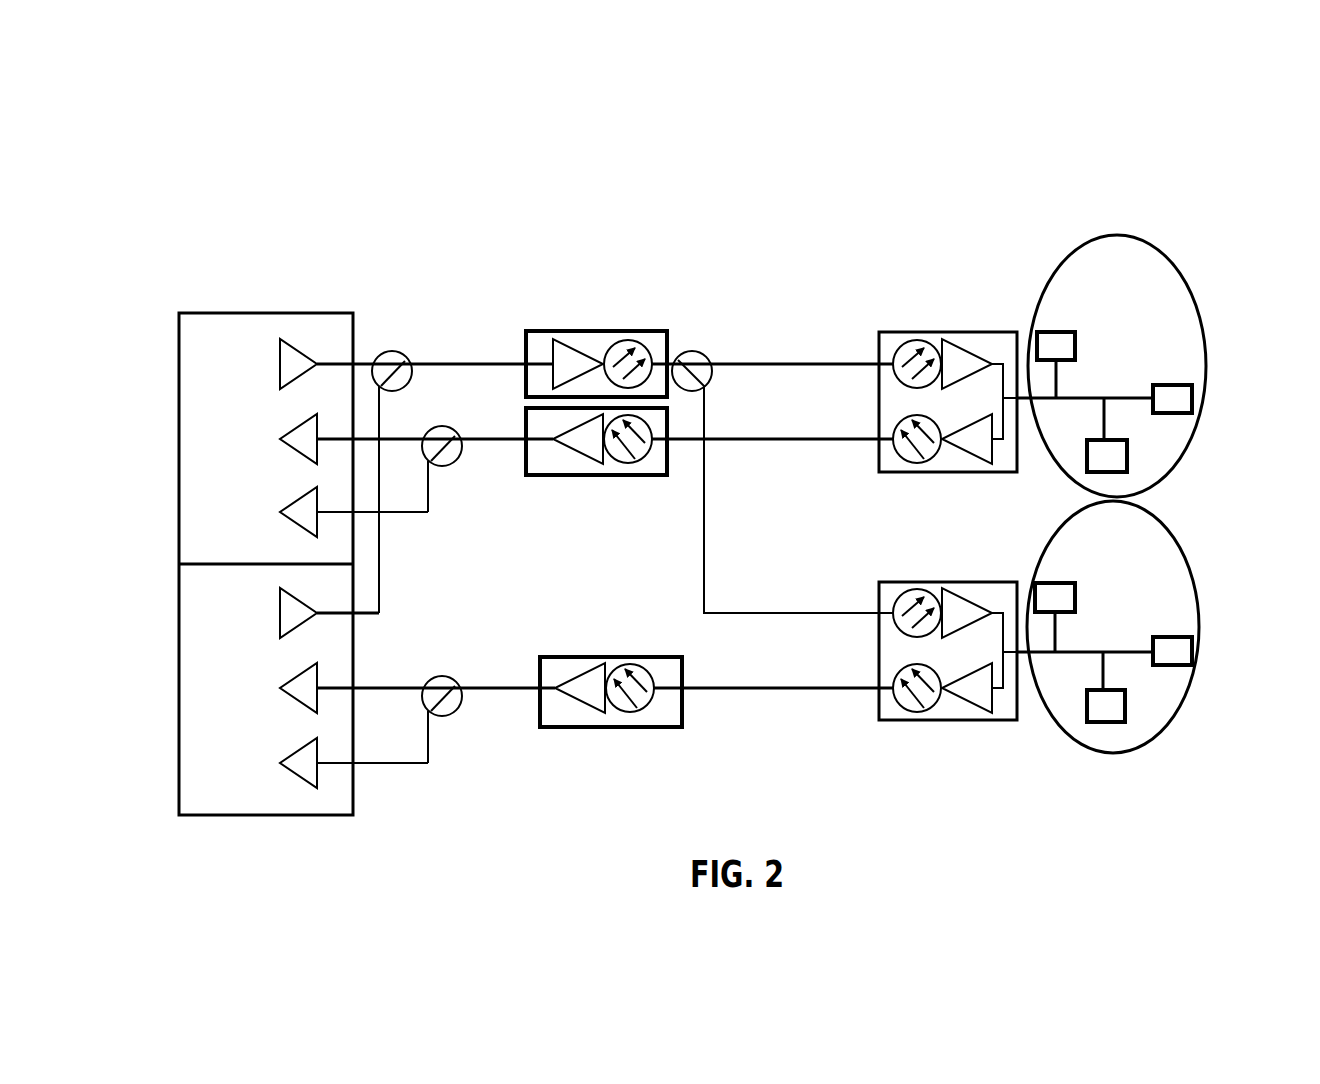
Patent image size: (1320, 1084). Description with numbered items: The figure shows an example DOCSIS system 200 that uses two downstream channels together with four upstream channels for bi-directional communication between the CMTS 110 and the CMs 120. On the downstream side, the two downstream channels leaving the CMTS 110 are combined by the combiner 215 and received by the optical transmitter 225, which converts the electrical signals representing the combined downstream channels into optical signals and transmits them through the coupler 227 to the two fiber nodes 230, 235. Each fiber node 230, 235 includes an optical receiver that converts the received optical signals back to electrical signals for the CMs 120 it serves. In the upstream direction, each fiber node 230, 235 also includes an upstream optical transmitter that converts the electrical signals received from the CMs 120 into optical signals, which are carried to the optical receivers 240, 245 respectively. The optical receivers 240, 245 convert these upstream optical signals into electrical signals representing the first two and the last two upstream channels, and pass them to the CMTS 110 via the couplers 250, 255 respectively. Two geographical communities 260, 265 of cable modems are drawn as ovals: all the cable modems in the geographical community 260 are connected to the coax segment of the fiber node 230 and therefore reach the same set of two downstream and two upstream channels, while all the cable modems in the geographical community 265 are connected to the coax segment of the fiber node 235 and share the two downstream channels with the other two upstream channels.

The DOCSIS system 200 is at (737, 135).
The CMTS 110 is at (252, 265).
The combiner 215 is at (392, 351).
The coupler 250 is at (437, 427).
The coupler 255 is at (437, 677).
The coupler 227 is at (692, 351).
The optical transmitter 225 is at (573, 331).
The optical receiver 240 is at (563, 475).
The optical receiver 245 is at (572, 657).
The fiber node 230 is at (925, 332).
The fiber node 235 is at (925, 582).
The CMs 120 is at (1212, 227).
The geographical community 260 is at (1200, 316).
The geographical community 265 is at (1198, 610).